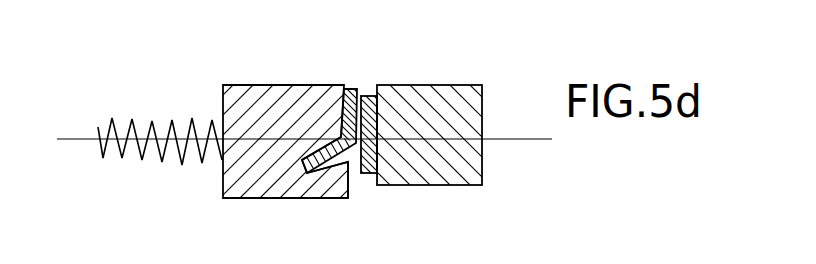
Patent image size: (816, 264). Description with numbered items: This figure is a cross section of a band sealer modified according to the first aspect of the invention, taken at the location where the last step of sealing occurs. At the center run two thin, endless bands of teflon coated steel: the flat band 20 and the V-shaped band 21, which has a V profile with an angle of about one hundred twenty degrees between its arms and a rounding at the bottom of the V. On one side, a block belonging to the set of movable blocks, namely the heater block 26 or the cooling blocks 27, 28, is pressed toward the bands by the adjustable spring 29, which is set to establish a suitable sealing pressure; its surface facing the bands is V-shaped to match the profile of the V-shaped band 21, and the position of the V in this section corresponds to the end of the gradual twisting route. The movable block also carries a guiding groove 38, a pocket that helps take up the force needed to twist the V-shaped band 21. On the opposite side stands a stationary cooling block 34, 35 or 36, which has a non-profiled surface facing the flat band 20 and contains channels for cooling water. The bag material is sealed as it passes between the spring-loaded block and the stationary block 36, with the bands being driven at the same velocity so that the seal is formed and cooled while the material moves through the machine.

The flat band 20 is at (367, 90).
The V-shaped band 21 is at (352, 84).
The heater block 26 is at (282, 108).
The cooling block 27 is at (282, 108).
The cooling block 28 is at (258, 98).
The adjustable spring 29 is at (98, 126).
The stationary cooling block 34 is at (436, 104).
The stationary cooling block 35 is at (436, 104).
The stationary cooling block 36 is at (453, 93).
The guiding groove 38 is at (340, 171).